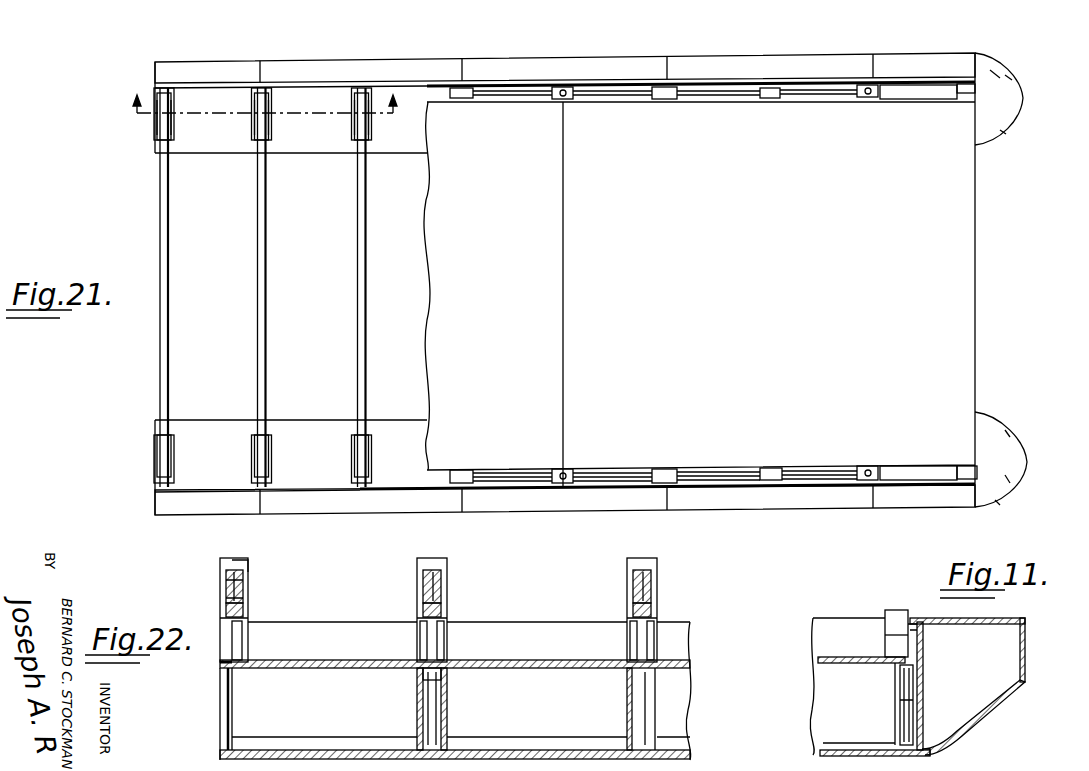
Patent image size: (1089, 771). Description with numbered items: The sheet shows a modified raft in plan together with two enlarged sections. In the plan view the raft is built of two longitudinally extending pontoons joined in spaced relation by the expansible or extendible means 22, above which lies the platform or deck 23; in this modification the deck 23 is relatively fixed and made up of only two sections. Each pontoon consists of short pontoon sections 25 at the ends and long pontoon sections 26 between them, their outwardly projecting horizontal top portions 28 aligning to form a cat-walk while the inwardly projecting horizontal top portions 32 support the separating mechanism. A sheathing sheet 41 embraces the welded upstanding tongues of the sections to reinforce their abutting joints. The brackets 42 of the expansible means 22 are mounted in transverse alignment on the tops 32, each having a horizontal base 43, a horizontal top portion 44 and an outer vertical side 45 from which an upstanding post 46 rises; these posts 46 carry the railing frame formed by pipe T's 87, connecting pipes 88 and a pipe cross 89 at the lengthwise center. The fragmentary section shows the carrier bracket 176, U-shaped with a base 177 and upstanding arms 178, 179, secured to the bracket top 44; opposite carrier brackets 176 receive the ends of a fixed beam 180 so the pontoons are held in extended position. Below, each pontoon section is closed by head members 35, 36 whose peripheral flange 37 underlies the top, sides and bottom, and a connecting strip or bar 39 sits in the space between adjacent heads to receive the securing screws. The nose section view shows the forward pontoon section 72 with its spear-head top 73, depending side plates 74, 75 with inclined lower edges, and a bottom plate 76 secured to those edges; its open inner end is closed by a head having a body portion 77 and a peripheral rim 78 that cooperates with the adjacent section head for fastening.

In FIG. 21, the expansible or extendible means 22 is at (262, 117).
In FIG. 21, the platform or deck 23 is at (978, 248).
In FIG. 21, the pontoon section 25 is at (905, 60).
In FIG. 21, the pontoon section 26 is at (512, 57).
In FIG. 21, the outwardly projecting horizontal top portion 28 is at (154, 66).
In FIG. 21, the inwardly projecting horizontal top portion 32 is at (300, 147).
In FIG. 22, the head member 35 is at (234, 702).
In FIG. 11, the head member 35 is at (895, 708).
In FIG. 22, the head member 36 is at (418, 724).
In FIG. 22, the peripheral outwardly projecting flange 37 is at (222, 680).
In FIG. 11, the peripheral outwardly projecting flange 37 is at (900, 678).
In FIG. 22, the connecting strip or bar 39 is at (441, 680).
In FIG. 21, the sheathing sheet 41 is at (425, 85).
In FIG. 22, the sheathing sheet 41 is at (565, 628).
In FIG. 21, the bracket 42 is at (156, 137).
In FIG. 22, the bracket 42 is at (237, 640).
In FIG. 22, the horizontal base 43 is at (222, 663).
In FIG. 22, the horizontal top portion 44 is at (225, 620).
In FIG. 22, the outer vertical side 45 is at (250, 652).
In FIG. 21, the upstanding post 46 is at (156, 98).
In FIG. 22, the upstanding post 46 is at (248, 565).
In FIG. 11, the upstanding post 46 is at (897, 612).
In FIG. 21, the forward or nose pontoon section 72 is at (1024, 98).
In FIG. 21, the top 73 is at (995, 72).
In FIG. 11, the top 73 is at (1010, 620).
In FIG. 21, the side plate 74 is at (1005, 133).
In FIG. 21, the side plate 75 is at (1015, 80).
In FIG. 11, the side plate 75 is at (1012, 648).
In FIG. 11, the bottom plate 76 is at (995, 712).
In FIG. 11, the body portion 77 is at (925, 662).
In FIG. 11, the peripheral rim 78 is at (922, 632).
In FIG. 21, the pipe T 87 is at (665, 99).
In FIG. 21, the connecting pipe 88 is at (600, 98).
In FIG. 21, the pipe cross 89 is at (560, 99).
In FIG. 22, the carrier bracket 176 is at (228, 575).
In FIG. 22, the base 177 is at (246, 612).
In FIG. 22, the upstanding arm 178 is at (226, 592).
In FIG. 22, the upstanding arm 179 is at (243, 590).
In FIG. 21, the fixed beam 180 is at (168, 296).
In FIG. 22, the fixed beam 180 is at (240, 562).